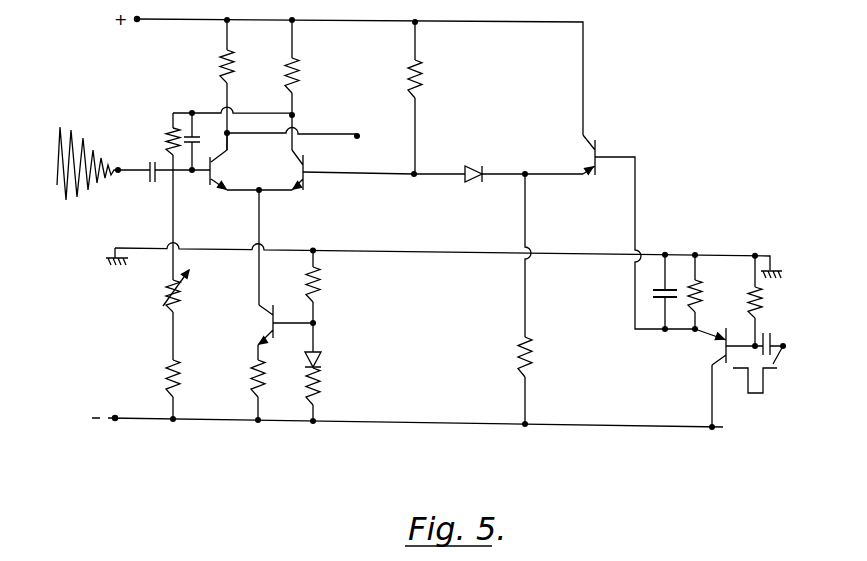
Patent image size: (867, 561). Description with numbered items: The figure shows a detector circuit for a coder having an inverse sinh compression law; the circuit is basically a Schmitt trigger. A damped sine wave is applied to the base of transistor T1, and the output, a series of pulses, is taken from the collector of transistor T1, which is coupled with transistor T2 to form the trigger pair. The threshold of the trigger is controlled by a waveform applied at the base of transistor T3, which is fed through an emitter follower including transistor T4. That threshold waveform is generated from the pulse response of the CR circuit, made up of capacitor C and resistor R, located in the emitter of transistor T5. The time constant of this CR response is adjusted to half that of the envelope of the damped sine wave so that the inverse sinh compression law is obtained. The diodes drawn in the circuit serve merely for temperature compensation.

The transistor T1 is at (214, 177).
The transistor T2 is at (307, 187).
The transistor T3 is at (266, 325).
The transistor T4 is at (603, 150).
The transistor T5 is at (713, 350).
The capacitor C is at (656, 297).
The resistor R is at (705, 296).